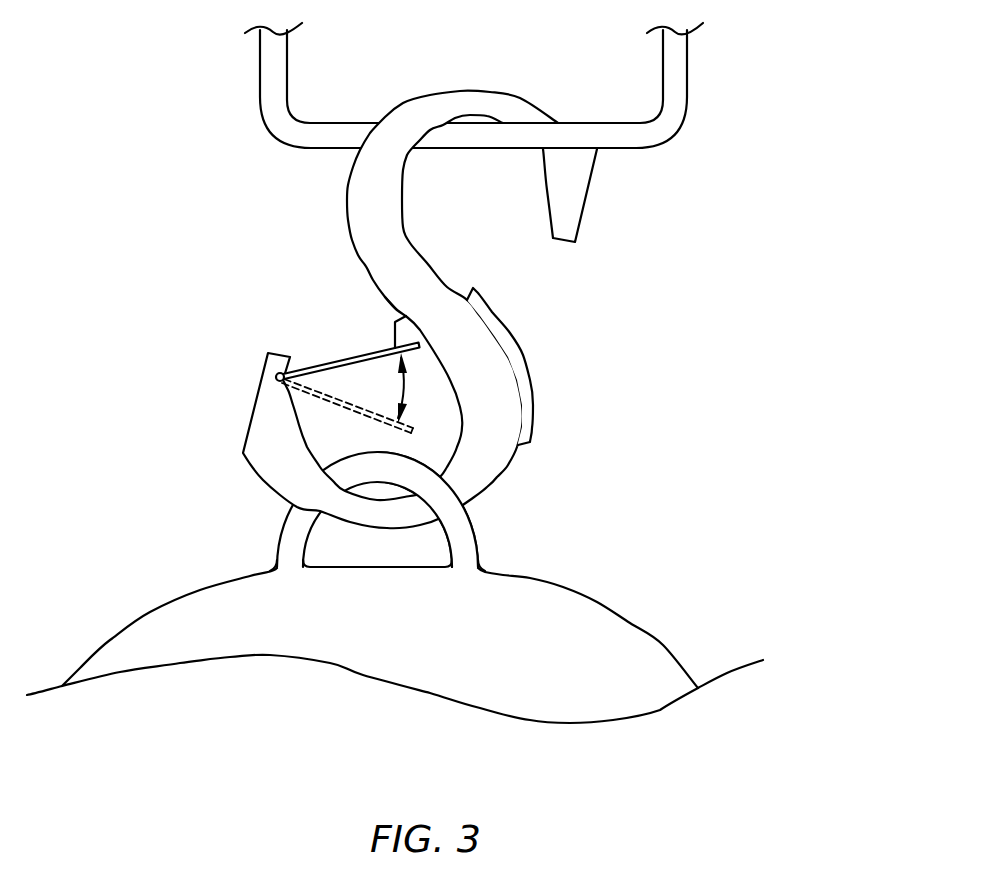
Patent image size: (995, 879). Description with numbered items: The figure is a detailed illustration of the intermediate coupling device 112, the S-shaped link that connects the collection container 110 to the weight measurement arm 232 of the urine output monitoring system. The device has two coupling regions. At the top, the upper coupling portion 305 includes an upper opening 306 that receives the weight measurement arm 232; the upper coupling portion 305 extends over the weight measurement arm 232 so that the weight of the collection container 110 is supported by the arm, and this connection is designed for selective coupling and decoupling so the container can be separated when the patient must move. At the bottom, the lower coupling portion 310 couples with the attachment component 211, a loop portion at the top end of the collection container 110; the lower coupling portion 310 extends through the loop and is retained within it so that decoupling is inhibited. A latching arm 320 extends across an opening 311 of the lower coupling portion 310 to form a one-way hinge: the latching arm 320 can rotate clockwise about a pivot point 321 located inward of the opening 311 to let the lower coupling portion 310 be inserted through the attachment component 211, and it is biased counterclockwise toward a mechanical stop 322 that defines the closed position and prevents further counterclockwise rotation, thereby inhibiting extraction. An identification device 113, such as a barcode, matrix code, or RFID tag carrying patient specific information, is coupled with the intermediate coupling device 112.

The collection container 110 is at (665, 650).
The intermediate coupling device 112 is at (515, 288).
The identification device 113 is at (525, 358).
The attachment component 211 is at (480, 527).
The weight measurement arm 232 is at (687, 67).
The upper coupling portion 305 is at (597, 208).
The upper opening 306 is at (503, 235).
The lower coupling portion 310 is at (518, 470).
The opening 311 is at (350, 343).
The latching arm 320 is at (274, 371).
The pivot point 321 is at (265, 378).
The mechanical stop 322 is at (373, 303).